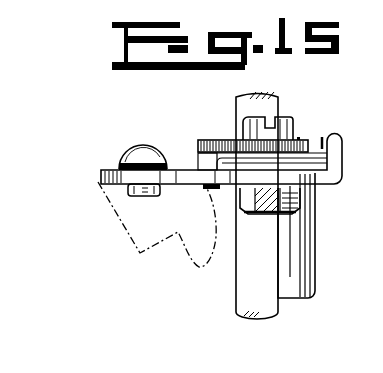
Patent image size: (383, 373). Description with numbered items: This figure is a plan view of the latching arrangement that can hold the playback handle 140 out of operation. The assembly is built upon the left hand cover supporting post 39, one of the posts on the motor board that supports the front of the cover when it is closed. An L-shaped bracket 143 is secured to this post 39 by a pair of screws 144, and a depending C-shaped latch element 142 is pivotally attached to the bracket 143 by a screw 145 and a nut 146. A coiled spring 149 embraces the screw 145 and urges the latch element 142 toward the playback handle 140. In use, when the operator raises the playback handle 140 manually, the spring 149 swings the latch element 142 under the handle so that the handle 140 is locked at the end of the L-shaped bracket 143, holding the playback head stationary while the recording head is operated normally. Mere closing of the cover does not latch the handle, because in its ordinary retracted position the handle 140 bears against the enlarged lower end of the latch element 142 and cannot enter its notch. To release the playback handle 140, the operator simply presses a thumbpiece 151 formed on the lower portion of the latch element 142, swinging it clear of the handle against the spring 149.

The post 39 is at (128, 237).
The playback handle 140 is at (235, 296).
The latch element 142 is at (212, 141).
The L-shaped bracket 143 is at (113, 170).
The screws 144 is at (148, 146).
The screw 145 is at (294, 121).
The nut 146 is at (302, 197).
The coiled spring 149 is at (199, 158).
The thumbpiece 151 is at (316, 239).